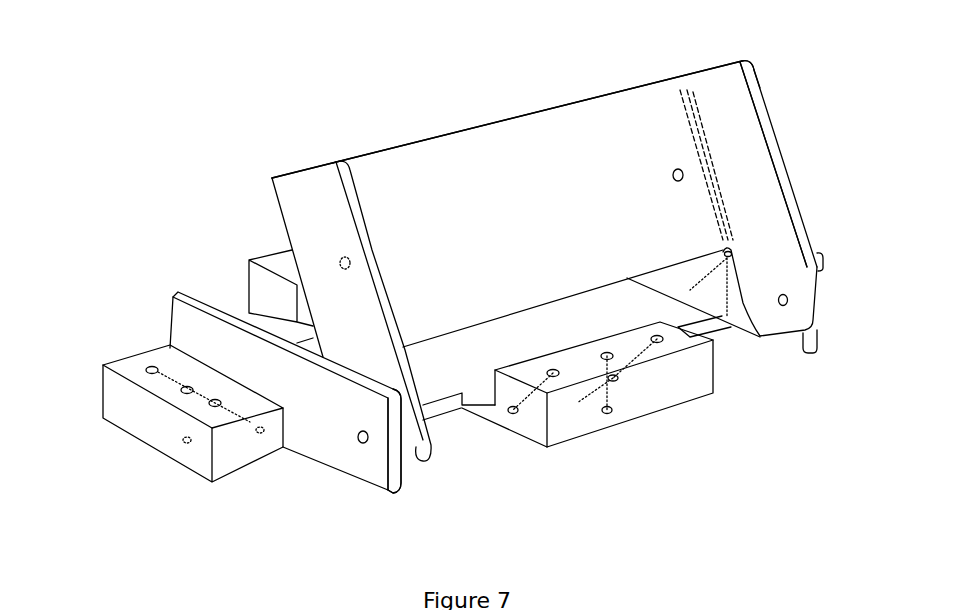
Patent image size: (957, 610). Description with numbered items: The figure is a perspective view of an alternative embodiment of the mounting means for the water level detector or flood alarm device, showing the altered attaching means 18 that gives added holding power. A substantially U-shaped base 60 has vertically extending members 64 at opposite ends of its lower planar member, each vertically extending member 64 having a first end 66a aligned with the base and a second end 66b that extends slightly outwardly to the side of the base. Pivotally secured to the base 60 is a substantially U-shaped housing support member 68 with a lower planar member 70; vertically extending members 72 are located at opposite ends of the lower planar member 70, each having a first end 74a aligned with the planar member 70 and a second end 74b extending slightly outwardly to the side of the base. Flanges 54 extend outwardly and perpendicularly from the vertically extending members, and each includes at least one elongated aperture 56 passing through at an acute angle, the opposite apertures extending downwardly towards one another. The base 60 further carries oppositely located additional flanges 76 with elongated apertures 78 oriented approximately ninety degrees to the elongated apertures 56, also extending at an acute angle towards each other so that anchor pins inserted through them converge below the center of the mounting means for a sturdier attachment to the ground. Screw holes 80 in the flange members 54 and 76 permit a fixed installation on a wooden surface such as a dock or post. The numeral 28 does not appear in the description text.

The attaching means 18 is at (92, 347).
The housing 28 is at (712, 609).
The flanges 54 is at (132, 418).
The elongated aperture 56 is at (220, 407).
The U-shaped base 60 is at (440, 418).
The vertically extending members 64 is at (793, 352).
The first end 66a is at (172, 297).
The second end 66b is at (375, 472).
The housing support member 68 is at (558, 82).
The lower planar member 70 is at (437, 155).
The vertically extending members 72 is at (765, 177).
The first end 74a is at (748, 62).
The second end 74b is at (817, 328).
The additional flanges 76 is at (258, 280).
The elongated apertures 78 is at (667, 337).
The screw holes 80 is at (180, 418).